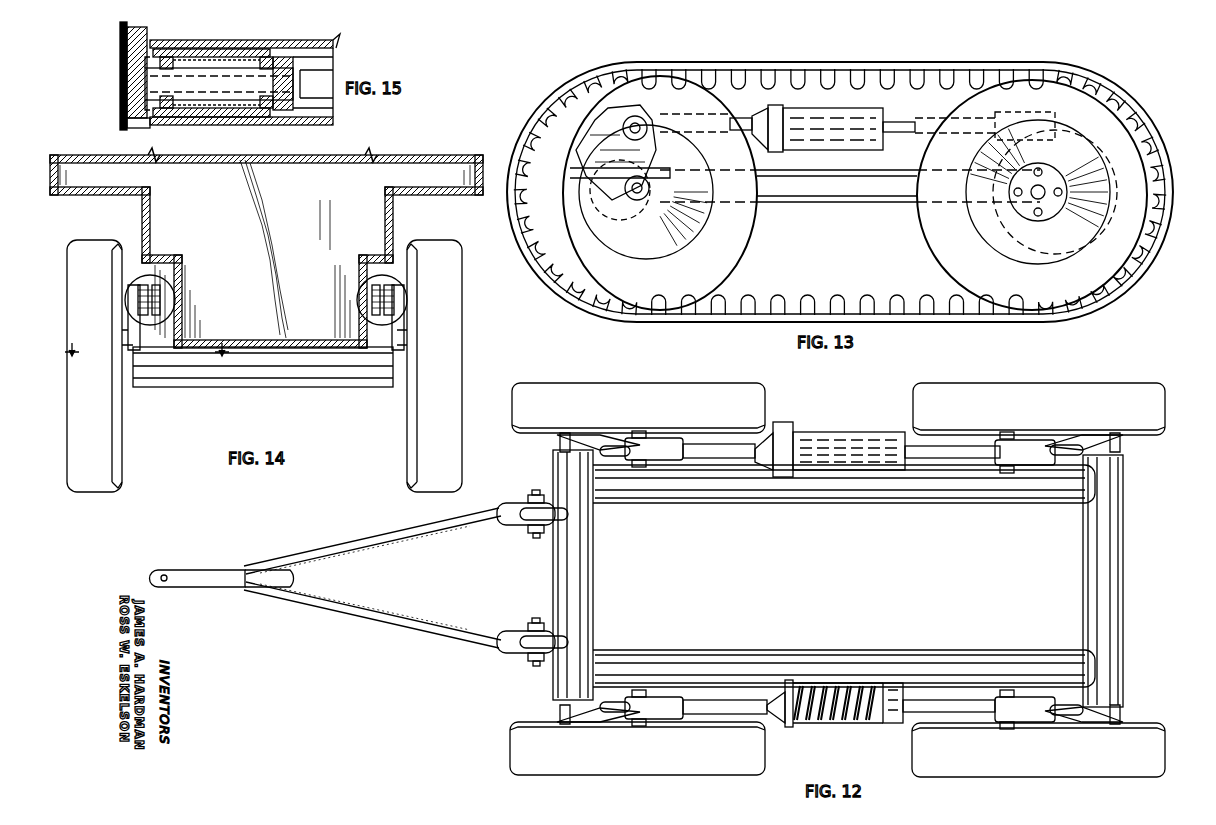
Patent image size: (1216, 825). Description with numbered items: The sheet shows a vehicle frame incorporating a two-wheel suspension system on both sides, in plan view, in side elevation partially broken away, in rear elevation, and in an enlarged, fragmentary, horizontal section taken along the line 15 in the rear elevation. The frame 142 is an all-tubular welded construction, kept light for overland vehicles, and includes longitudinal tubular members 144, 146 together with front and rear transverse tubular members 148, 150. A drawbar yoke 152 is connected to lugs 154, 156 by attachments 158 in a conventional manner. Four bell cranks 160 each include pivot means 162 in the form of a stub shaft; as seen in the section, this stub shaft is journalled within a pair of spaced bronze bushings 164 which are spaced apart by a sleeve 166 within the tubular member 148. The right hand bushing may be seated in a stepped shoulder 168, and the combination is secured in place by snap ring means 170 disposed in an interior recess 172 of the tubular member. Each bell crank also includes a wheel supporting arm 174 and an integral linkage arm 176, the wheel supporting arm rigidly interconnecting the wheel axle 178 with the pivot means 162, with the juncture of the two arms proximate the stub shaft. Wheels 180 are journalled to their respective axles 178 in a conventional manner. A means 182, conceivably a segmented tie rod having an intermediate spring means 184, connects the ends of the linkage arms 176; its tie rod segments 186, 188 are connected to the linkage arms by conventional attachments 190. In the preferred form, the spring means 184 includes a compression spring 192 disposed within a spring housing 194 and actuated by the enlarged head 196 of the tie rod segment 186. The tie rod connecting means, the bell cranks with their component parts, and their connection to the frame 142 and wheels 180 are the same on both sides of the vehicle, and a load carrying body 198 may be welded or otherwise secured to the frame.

In FIG. 14, the section line 15— 15 is at (148, 355).
In FIG. 14, the frame 142 is at (262, 378).
In FIG. 12, the frame 142 is at (855, 578).
In FIG. 12, the longitudinal tubular member 144 is at (1005, 495).
In FIG. 12, the longitudinal tubular member 146 is at (962, 666).
In FIG. 15, the front transverse tubular member 148 is at (333, 42).
In FIG. 14, the front transverse tubular member 148 is at (366, 380).
In FIG. 12, the front transverse tubular member 148 is at (578, 573).
In FIG. 12, the rear transverse tubular member 150 is at (1100, 518).
In FIG. 12, the drawbar yoke 152 is at (206, 572).
In FIG. 12, the lug 154 is at (578, 514).
In FIG. 12, the lug 156 is at (586, 644).
In FIG. 12, the attachments 158 is at (537, 494).
In FIG. 15, the bell crank 160 is at (147, 40).
In FIG. 13, the bell crank 160 is at (1065, 142).
In FIG. 12, the bell crank 160 is at (557, 437).
In FIG. 15, the pivot means 162 is at (215, 68).
In FIG. 14, the pivot means 162 is at (144, 387).
In FIG. 15, the bronze bushings 164 is at (167, 118).
In FIG. 15, the sleeve 166 is at (233, 117).
In FIG. 15, the stepped shoulder 168 is at (283, 57).
In FIG. 15, the snap ring means 170 is at (120, 57).
In FIG. 15, the interior recess 172 is at (145, 128).
In FIG. 15, the wheel supporting arm 174 is at (127, 84).
In FIG. 13, the wheel supporting arm 174 is at (580, 212).
In FIG. 14, the linkage arm 176 is at (135, 340).
In FIG. 13, the linkage arm 176 is at (590, 124).
In FIG. 13, the wheel axle 178 is at (625, 203).
In FIG. 14, the wheel 180 is at (110, 455).
In FIG. 13, the wheel 180 is at (740, 223).
In FIG. 12, the wheel 180 is at (765, 398).
In FIG. 13, the connecting means 182 is at (760, 108).
In FIG. 14, the spring means 184 is at (135, 272).
In FIG. 13, the spring means 184 is at (848, 108).
In FIG. 12, the spring means 184 is at (836, 445).
In FIG. 13, the tie rod segment 186 is at (718, 108).
In FIG. 12, the tie rod segment 186 is at (770, 704).
In FIG. 13, the tie rod segment 188 is at (905, 120).
In FIG. 12, the tie rod segment 188 is at (1039, 580).
In FIG. 13, the attachments 190 is at (640, 115).
In FIG. 12, the compression spring 192 is at (840, 722).
In FIG. 12, the spring housing 194 is at (898, 724).
In FIG. 12, the enlarged head 196 is at (882, 722).
In FIG. 14, the body 198 is at (393, 212).